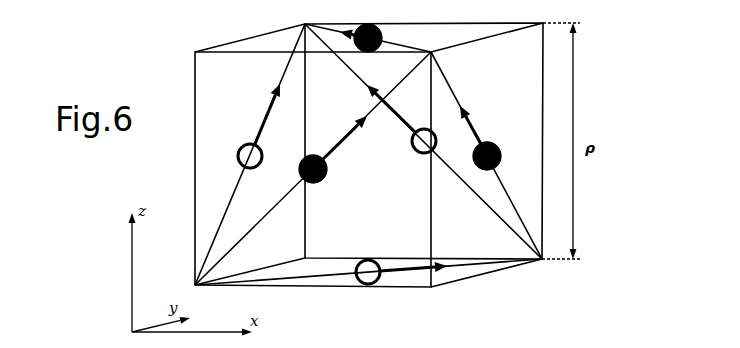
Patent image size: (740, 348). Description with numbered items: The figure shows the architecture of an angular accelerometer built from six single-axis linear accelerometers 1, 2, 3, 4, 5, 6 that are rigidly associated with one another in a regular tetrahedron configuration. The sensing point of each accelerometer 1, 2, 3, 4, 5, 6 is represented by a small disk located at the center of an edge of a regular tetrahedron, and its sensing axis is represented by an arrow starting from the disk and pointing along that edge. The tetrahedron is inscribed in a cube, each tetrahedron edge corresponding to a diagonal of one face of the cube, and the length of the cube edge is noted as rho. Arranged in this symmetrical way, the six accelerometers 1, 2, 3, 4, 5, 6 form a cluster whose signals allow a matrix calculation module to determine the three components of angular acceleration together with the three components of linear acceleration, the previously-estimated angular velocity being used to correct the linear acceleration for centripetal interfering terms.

The single-axis linear accelerometer 1 is at (401, 261).
The single-axis linear accelerometer 2 is at (333, 151).
The single-axis linear accelerometer 3 is at (258, 126).
The single-axis linear accelerometer 4 is at (488, 138).
The single-axis linear accelerometer 5 is at (401, 129).
The single-axis linear accelerometer 6 is at (361, 27).